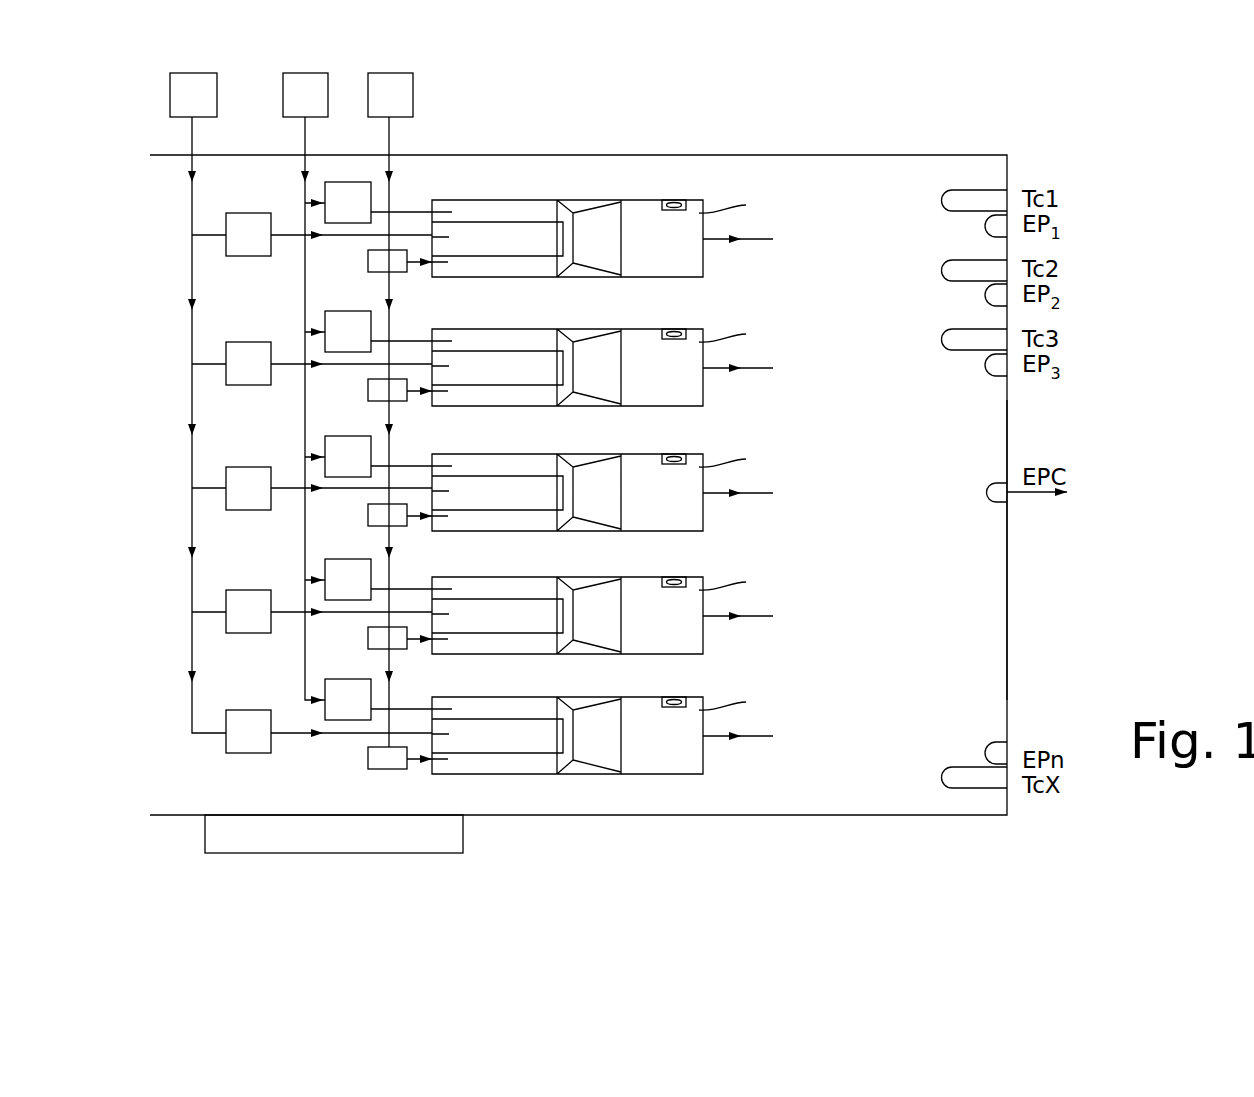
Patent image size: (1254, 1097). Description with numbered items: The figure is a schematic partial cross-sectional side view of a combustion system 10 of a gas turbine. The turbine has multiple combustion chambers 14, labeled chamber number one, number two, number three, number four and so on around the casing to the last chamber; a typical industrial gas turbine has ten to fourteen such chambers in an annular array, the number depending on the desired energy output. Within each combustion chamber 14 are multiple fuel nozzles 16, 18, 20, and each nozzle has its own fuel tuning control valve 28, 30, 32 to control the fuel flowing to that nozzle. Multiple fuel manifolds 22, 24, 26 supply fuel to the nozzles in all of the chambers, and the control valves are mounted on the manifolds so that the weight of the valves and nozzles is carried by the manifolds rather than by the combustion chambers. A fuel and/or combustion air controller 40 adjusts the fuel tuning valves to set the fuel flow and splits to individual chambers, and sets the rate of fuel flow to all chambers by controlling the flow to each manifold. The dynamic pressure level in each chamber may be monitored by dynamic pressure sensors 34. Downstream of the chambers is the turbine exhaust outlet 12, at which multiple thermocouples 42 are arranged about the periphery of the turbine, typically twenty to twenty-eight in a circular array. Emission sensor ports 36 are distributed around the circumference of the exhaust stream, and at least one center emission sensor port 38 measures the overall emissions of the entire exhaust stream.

The combustion system 10 is at (580, 155).
The turbine exhaust outlet 12 is at (1007, 557).
The combustion chamber 14 is at (682, 278).
The fuel nozzle 16 is at (497, 461).
The fuel nozzle 18 is at (442, 238).
The fuel nozzle 20 is at (475, 532).
The fuel manifold 22 is at (197, 73).
The fuel manifold 24 is at (310, 73).
The fuel manifold 26 is at (402, 73).
The fuel tuning control valve 28 is at (247, 257).
The fuel tuning control valve 30 is at (368, 181).
The fuel tuning control valve 32 is at (370, 253).
The dynamic pressure sensor 34 is at (410, 211).
The emission sensor port 36 is at (328, 240).
The center emission sensor port 38 is at (422, 271).
The fuel and/or combustion air controller 40 is at (463, 836).
The thermocouple 42 is at (942, 340).